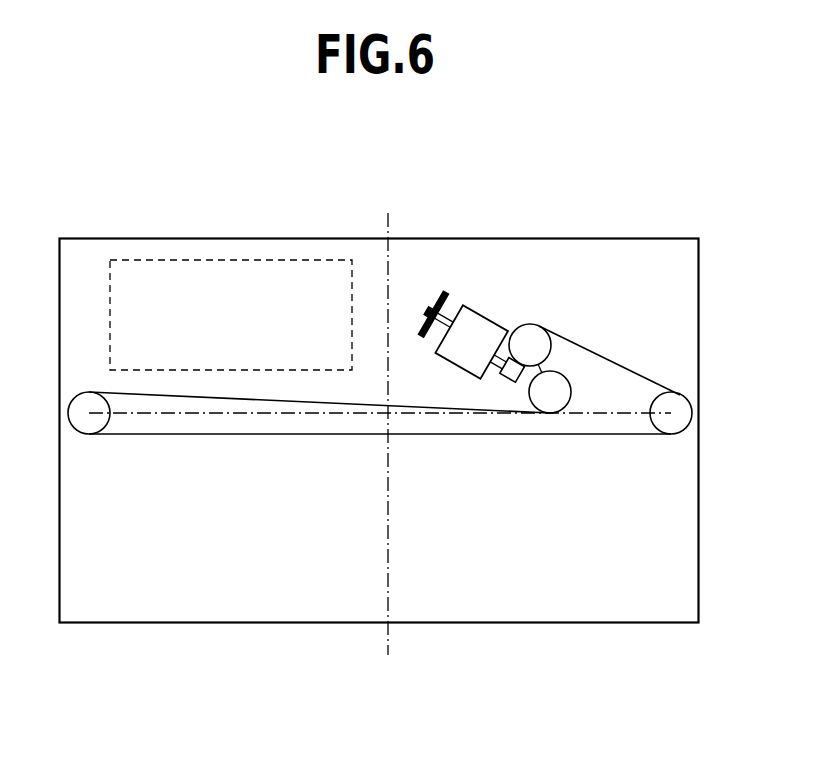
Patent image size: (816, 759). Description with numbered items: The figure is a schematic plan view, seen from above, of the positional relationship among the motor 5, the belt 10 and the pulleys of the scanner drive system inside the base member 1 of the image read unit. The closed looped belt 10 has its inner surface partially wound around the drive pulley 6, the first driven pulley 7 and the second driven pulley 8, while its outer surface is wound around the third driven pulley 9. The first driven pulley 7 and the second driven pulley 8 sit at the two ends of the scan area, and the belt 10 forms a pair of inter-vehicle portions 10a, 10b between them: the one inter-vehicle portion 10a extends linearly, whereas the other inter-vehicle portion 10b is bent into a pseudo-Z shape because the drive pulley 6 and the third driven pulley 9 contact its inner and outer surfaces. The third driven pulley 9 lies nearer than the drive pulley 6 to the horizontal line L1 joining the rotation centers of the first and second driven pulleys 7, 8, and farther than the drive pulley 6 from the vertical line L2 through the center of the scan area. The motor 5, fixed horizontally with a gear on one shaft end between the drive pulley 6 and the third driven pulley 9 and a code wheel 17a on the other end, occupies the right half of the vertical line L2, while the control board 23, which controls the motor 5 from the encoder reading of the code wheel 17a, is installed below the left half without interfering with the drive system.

The base member 1 is at (367, 258).
The control board 23 is at (220, 260).
The motor 5 is at (489, 323).
The drive pulley 6 is at (531, 325).
The first driven pulley 7 is at (684, 397).
The second driven pulley 8 is at (80, 396).
The third driven pulley 9 is at (573, 383).
The belt 10 is at (384, 504).
The inter-vehicle portion 10a is at (412, 434).
The inter-vehicle portion 10b is at (432, 408).
The code wheel 17a is at (446, 297).
The horizontal line L1 is at (225, 421).
The vertical line L2 is at (388, 640).